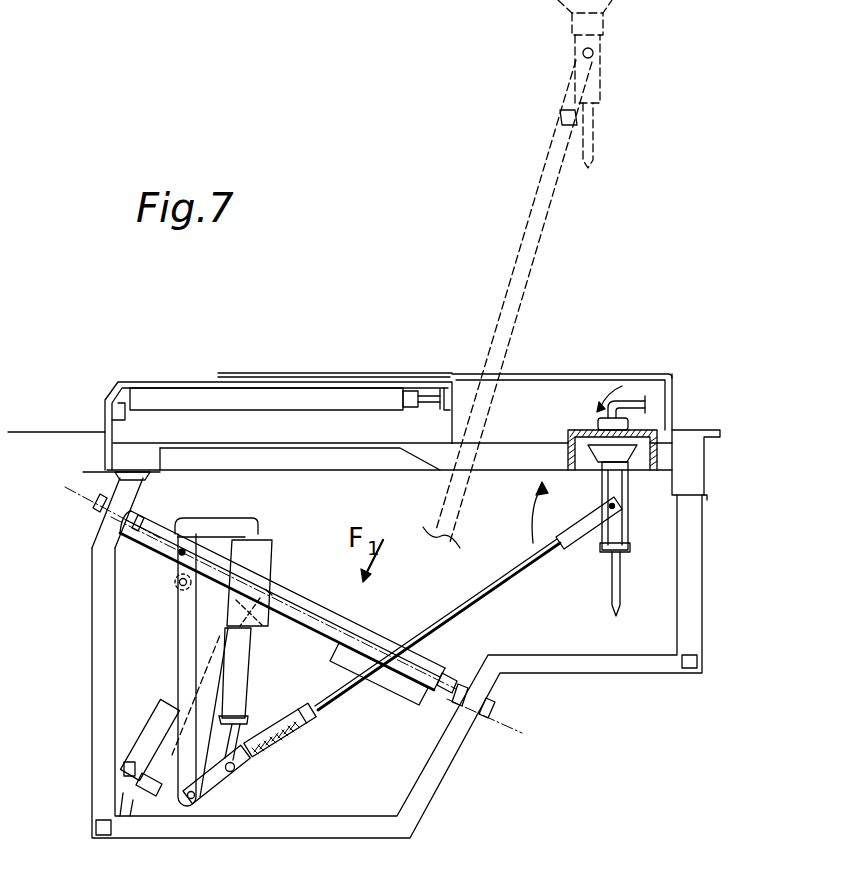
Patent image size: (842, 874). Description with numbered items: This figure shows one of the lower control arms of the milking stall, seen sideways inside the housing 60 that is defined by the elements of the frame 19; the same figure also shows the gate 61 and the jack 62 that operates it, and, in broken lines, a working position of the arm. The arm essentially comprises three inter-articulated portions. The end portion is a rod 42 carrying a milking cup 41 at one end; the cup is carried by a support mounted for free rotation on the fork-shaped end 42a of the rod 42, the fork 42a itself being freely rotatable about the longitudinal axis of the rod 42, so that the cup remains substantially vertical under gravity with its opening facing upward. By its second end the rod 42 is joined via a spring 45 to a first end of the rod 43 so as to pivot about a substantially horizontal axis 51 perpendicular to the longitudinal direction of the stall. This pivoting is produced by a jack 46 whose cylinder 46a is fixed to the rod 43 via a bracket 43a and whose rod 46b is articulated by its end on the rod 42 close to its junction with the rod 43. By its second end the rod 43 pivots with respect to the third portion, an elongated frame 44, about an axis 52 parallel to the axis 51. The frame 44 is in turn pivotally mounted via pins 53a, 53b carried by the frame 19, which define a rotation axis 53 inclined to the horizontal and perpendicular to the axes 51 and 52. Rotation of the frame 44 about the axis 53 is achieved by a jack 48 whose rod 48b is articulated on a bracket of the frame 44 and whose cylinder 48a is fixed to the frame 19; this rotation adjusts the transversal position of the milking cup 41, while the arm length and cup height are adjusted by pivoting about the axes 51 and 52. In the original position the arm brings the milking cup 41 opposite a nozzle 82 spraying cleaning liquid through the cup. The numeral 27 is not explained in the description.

The frame 19 is at (449, 768).
The support plate 27 is at (395, 690).
The milking cup 41 is at (622, 541).
The rod 42 is at (522, 573).
The fork-shaped end 42a is at (572, 523).
The rod 43 is at (180, 653).
The bracket 43a is at (240, 505).
The frame 44 is at (327, 615).
The spring 45 is at (297, 735).
The jack 46 is at (228, 613).
The cylinder 46a is at (270, 546).
The rod 46b is at (258, 728).
The jack 48 is at (216, 684).
The cylinder 48a is at (147, 733).
The rod 48b is at (273, 588).
The axis 51 is at (207, 803).
The axis 52 is at (180, 558).
The rotation axis 53 is at (501, 713).
The pin 53a is at (134, 522).
The pin 53b is at (461, 680).
The housing 60 is at (512, 527).
The gate 61 is at (402, 372).
The jack 62 is at (291, 394).
The nozzle 82 is at (596, 421).